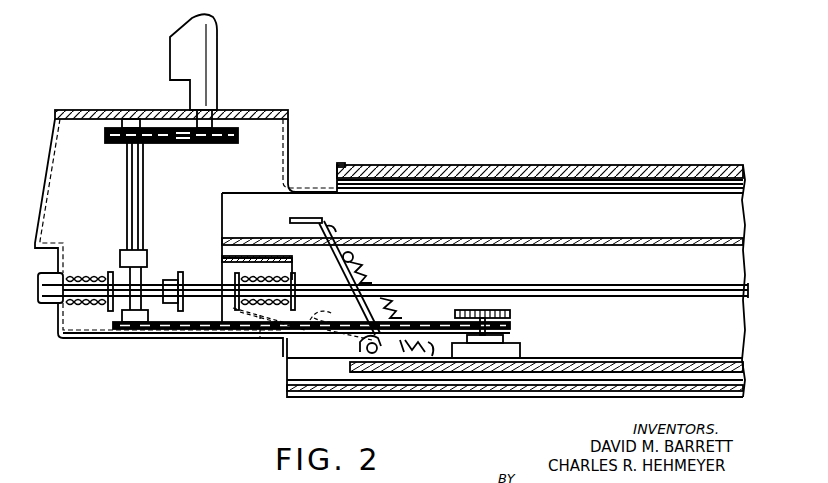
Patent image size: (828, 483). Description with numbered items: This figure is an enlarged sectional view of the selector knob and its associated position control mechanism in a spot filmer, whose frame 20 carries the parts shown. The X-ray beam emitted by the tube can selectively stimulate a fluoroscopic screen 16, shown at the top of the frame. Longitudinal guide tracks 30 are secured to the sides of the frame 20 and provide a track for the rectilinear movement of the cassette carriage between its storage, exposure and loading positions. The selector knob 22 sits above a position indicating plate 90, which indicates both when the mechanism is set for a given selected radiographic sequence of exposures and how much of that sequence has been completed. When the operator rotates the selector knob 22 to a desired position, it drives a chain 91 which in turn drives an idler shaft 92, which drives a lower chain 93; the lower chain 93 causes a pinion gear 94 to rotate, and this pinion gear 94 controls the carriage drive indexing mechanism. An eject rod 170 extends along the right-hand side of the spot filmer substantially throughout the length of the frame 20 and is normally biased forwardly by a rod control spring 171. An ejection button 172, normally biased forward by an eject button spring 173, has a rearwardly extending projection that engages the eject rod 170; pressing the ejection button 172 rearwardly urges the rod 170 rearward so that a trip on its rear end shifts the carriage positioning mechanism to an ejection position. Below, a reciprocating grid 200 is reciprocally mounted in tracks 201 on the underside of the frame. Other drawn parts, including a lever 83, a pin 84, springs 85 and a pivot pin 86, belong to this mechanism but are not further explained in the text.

The fluoroscopic screen 16 is at (470, 165).
The spot filmer frame 20 is at (283, 358).
The selector knob 22 is at (215, 65).
The longitudinal guide tracks 30 is at (542, 238).
The lever arm 83 is at (345, 275).
The pin 84 is at (366, 348).
The spring 85 is at (375, 278).
The pivot pin 86 is at (330, 232).
The position indicating plate 90 is at (110, 110).
The chain 91 is at (177, 143).
The idler shaft 92 is at (133, 202).
The lower chain 93 is at (183, 330).
The pinion gear 94 is at (512, 314).
The eject rod 170 is at (643, 297).
The rod control spring 171 is at (233, 273).
The ejection button 172 is at (42, 298).
The eject button spring 173 is at (85, 275).
The reciprocating grid 200 is at (585, 367).
The tracks 201 is at (332, 368).